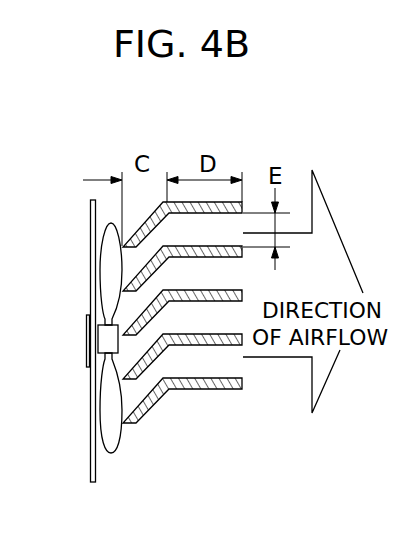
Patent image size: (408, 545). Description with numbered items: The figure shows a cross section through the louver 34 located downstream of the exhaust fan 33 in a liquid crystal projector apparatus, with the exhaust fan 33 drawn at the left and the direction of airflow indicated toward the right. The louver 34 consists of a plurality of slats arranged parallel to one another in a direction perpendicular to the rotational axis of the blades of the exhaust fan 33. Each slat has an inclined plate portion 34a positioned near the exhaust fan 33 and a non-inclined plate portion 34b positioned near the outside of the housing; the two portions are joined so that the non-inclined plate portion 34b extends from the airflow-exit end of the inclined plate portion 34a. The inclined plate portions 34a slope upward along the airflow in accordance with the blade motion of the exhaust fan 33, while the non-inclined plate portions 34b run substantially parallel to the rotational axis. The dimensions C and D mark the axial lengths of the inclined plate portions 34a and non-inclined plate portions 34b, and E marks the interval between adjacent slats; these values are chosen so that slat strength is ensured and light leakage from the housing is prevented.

The exhaust fan 33 is at (108, 405).
The louver 34 is at (182, 309).
The inclined plate portion 34a is at (168, 142).
The non-inclined plate portion 34b is at (242, 142).